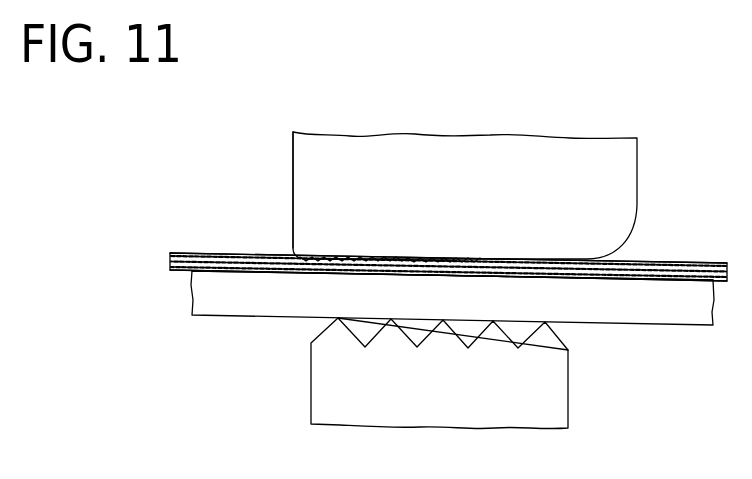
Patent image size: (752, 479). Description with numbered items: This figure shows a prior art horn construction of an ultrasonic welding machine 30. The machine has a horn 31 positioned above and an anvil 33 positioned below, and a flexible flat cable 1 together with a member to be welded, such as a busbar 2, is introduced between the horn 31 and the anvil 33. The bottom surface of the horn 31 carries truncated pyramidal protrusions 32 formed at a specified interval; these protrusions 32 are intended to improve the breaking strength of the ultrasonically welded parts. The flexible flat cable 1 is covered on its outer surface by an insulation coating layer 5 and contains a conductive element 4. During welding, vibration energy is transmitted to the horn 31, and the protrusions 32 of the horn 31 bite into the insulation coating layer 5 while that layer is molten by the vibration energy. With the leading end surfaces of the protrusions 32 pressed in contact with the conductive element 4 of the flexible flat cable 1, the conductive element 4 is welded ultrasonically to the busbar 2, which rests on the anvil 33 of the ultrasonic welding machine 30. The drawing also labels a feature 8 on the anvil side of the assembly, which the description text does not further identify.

The flexible flat cable 1 is at (667, 260).
The busbar 2 is at (648, 325).
The conductive element 4 is at (337, 270).
The insulation coating layer 5 is at (293, 260).
The serrated projections 8 is at (493, 345).
The ultrasonic welding machine 30 is at (643, 174).
The horn 31 is at (297, 150).
The truncated pyramidal protrusions 32 is at (478, 260).
The anvil 33 is at (563, 402).